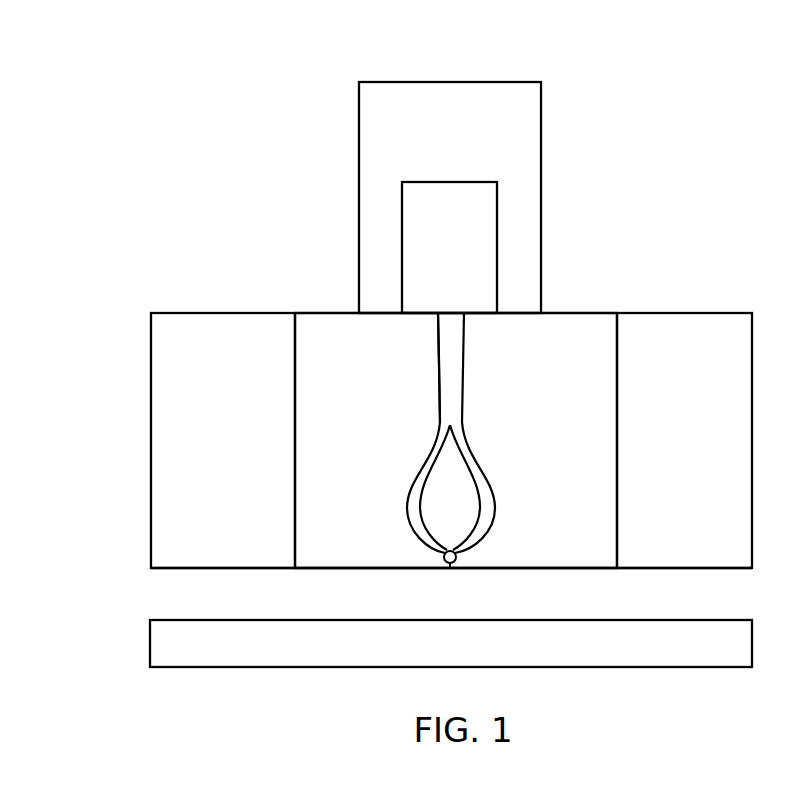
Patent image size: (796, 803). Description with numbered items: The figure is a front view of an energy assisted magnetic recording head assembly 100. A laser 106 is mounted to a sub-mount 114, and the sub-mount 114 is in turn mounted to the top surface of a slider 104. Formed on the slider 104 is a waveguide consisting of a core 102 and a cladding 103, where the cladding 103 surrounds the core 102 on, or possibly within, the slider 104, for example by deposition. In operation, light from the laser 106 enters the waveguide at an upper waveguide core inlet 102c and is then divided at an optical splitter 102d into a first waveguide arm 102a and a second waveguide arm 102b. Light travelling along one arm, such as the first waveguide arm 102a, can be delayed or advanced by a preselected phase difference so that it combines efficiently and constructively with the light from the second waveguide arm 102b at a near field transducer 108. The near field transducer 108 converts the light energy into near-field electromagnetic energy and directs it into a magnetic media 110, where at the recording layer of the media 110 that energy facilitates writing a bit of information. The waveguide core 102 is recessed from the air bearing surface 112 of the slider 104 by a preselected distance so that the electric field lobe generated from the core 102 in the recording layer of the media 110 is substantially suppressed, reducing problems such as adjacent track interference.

The energy assisted magnetic recording head assembly 100 is at (682, 126).
The waveguide core 102 is at (466, 334).
The first waveguide arm 102a is at (495, 508).
The second waveguide arm 102b is at (407, 512).
The upper waveguide core inlet 102c is at (443, 315).
The optical splitter 102d is at (438, 393).
The cladding 103 is at (537, 420).
The slider 104 is at (688, 313).
The laser 106 is at (476, 275).
The near field transducer 108 is at (450, 551).
The magnetic media 110 is at (518, 657).
The air bearing surface 112 is at (712, 568).
The sub-mount 114 is at (446, 82).